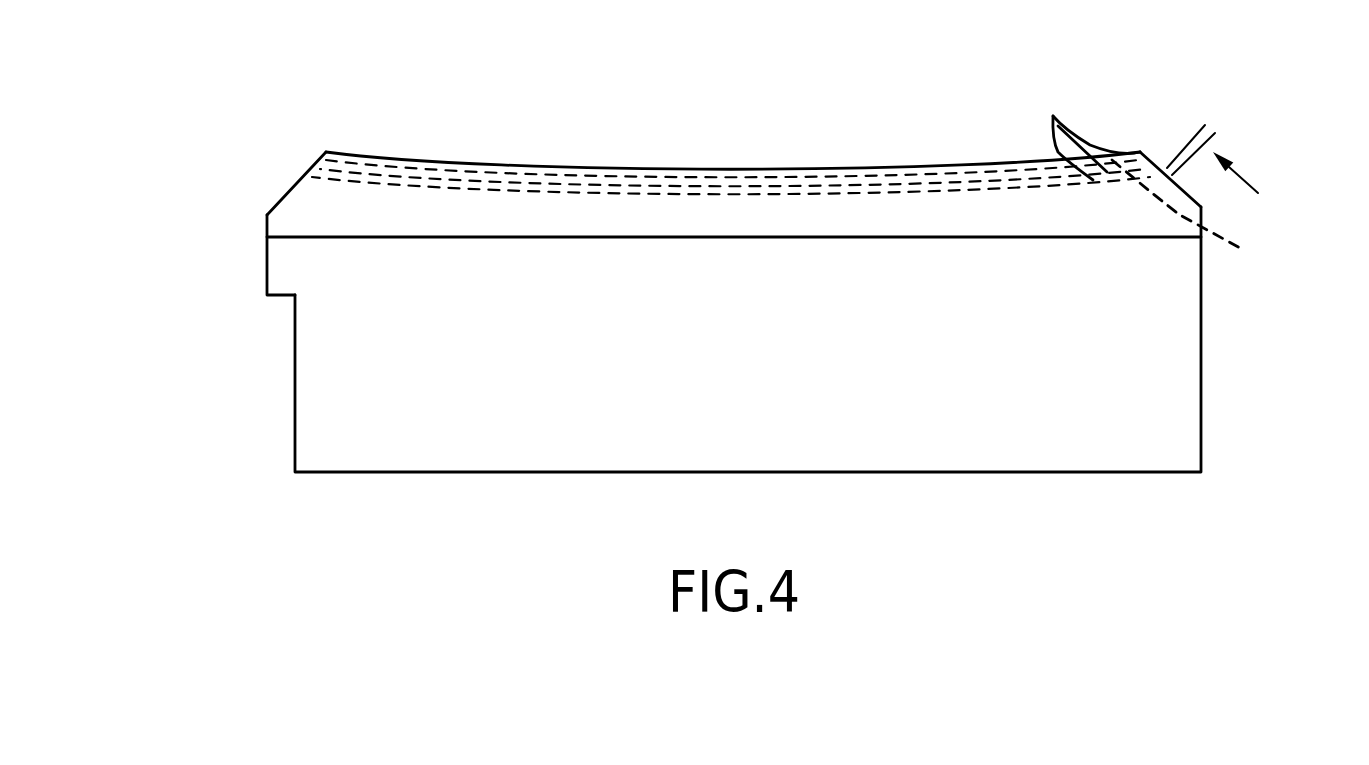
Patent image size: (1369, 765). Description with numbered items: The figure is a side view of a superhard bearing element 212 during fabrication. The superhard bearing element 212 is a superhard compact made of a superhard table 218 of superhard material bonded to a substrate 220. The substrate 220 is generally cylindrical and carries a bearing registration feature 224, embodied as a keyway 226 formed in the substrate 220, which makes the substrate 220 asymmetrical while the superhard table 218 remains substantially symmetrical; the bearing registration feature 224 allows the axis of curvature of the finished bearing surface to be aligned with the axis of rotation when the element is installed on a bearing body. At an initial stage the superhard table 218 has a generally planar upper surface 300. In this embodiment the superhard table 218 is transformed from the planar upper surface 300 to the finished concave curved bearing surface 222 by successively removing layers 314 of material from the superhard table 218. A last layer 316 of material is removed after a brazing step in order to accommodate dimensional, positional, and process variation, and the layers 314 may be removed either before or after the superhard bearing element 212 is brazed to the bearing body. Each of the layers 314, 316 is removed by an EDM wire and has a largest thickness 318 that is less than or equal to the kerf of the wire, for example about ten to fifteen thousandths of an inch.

The superhard bearing element 212 is at (701, 243).
The superhard table 218 is at (298, 222).
The substrate 220 is at (340, 433).
The bearing surface 222 is at (1198, 210).
The bearing registration feature 224 is at (226, 380).
The keyway 226 is at (295, 335).
The planar upper surface 300 is at (755, 170).
The layers 314 is at (1079, 130).
The last layer 316 is at (1165, 168).
The largest thickness 318 is at (1169, 109).